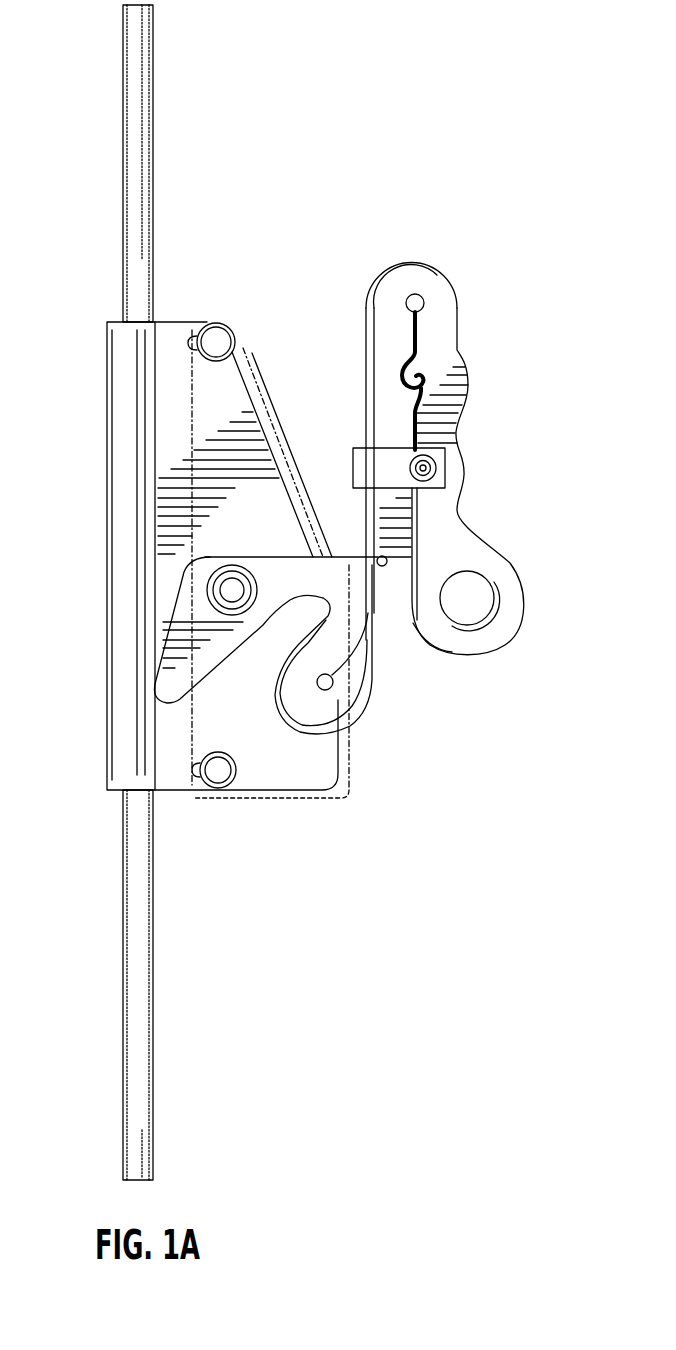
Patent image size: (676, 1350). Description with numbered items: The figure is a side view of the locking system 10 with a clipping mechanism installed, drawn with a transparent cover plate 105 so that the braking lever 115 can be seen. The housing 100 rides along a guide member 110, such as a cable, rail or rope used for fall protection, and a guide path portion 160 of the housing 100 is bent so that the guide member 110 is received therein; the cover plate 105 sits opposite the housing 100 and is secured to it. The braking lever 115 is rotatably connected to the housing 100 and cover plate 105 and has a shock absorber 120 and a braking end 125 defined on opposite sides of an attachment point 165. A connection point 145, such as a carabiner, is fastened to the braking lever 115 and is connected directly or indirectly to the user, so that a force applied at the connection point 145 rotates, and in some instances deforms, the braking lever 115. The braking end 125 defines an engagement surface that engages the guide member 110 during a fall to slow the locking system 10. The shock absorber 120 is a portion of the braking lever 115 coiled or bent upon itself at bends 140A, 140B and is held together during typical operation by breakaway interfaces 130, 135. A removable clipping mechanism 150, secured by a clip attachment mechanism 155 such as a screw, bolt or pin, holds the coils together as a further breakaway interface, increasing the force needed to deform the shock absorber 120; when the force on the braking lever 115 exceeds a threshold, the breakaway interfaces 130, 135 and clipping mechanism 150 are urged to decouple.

The locking system 10 is at (317, 66).
The housing 100 is at (170, 743).
The cover plate 105 is at (253, 340).
The guide member 110 is at (137, 190).
The braking lever 115 is at (290, 538).
The shock absorber 120 is at (461, 269).
The braking end 125 is at (177, 680).
The breakaway interface 130 is at (418, 367).
The breakaway interface 135 is at (375, 558).
The bend 140A is at (350, 690).
The bend 140B is at (420, 265).
The connection point 145 is at (466, 600).
The clipping mechanism 150 is at (400, 481).
The clip attachment mechanism 155 is at (423, 470).
The guide path portion 160 is at (113, 320).
The attachment point 165 is at (222, 580).